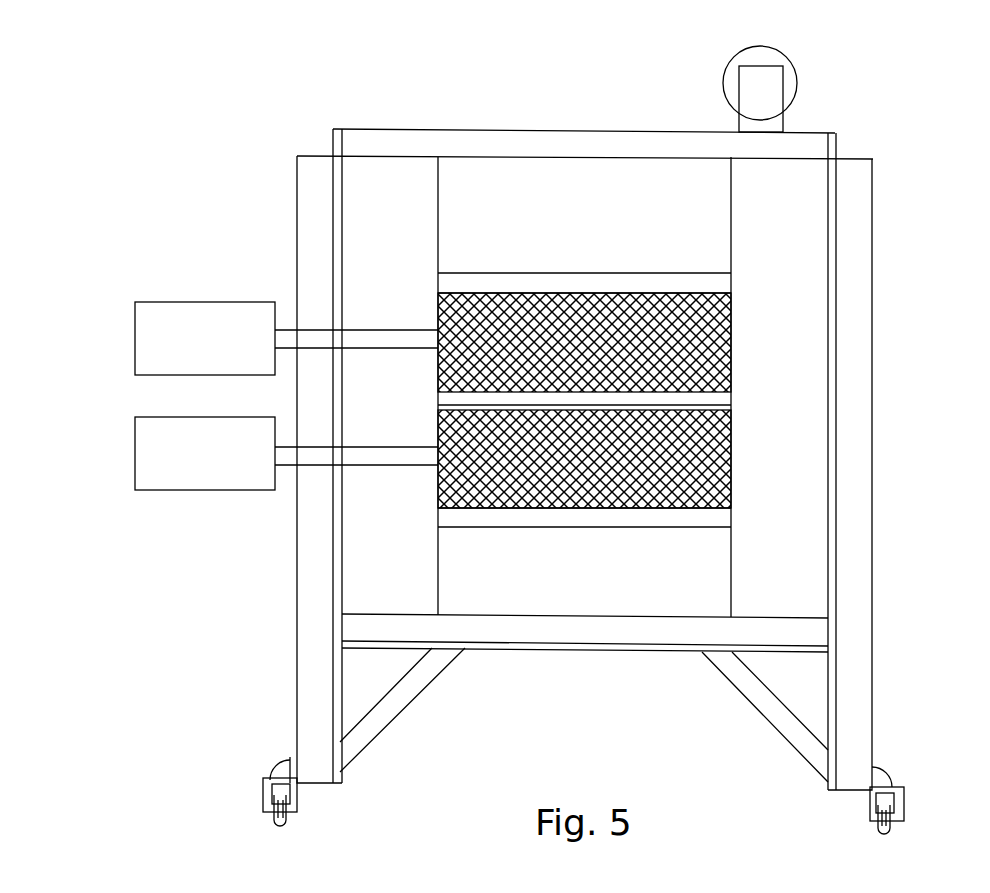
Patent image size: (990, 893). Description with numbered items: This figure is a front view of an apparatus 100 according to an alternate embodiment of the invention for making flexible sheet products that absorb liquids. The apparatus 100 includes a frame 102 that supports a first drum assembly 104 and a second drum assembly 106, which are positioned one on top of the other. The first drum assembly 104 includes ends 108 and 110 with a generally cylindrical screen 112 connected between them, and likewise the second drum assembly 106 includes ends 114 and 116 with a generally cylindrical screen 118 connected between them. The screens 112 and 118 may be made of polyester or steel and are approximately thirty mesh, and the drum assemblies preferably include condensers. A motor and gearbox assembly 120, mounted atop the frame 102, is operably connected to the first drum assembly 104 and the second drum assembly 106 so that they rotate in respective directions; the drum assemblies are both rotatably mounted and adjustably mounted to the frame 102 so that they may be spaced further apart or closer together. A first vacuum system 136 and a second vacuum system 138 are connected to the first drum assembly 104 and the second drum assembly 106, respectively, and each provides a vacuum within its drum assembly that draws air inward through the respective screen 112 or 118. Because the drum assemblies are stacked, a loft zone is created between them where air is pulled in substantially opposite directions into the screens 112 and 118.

The apparatus 100 is at (898, 248).
The frame 102 is at (868, 625).
The first drum assembly 104 is at (527, 262).
The second drum assembly 106 is at (572, 546).
The end 108 is at (741, 335).
The end 110 is at (428, 313).
The screen 112 is at (470, 298).
The end 114 is at (741, 490).
The end 116 is at (428, 493).
The screen 118 is at (641, 506).
The motor and gearbox assembly 120 is at (819, 97).
The first vacuum system 136 is at (190, 302).
The second vacuum system 138 is at (178, 490).